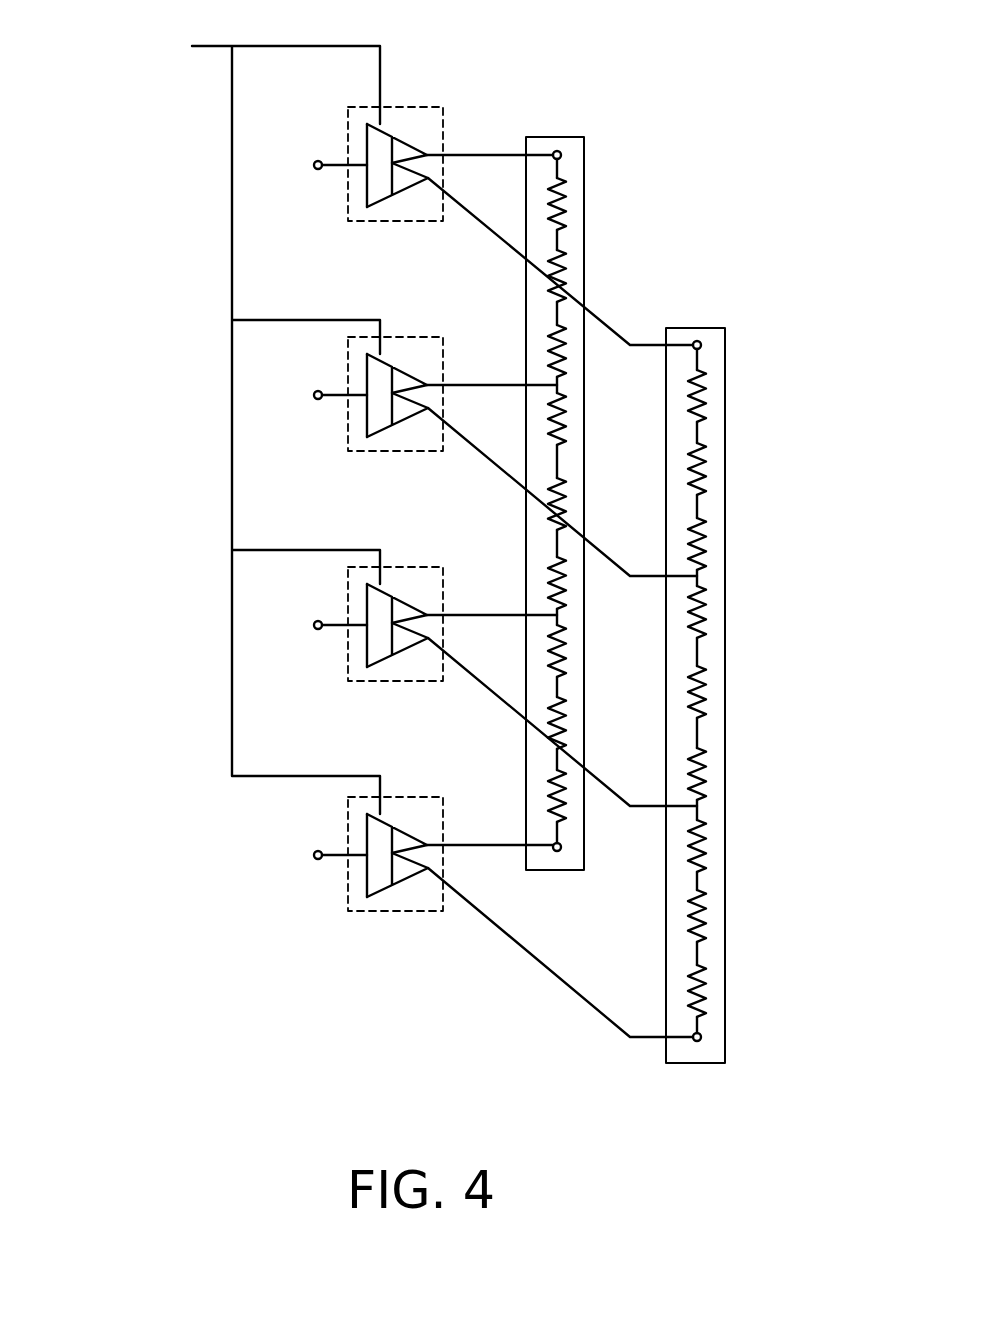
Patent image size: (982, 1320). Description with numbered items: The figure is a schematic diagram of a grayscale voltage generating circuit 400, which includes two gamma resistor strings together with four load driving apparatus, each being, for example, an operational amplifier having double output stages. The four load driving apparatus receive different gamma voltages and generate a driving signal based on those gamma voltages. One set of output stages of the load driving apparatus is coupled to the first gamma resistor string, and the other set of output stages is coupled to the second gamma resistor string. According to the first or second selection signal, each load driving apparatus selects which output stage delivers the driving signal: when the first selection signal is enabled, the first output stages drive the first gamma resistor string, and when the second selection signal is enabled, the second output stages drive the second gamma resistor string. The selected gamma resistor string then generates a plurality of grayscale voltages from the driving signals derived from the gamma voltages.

The grayscale voltage generating circuit 400 is at (815, 1133).